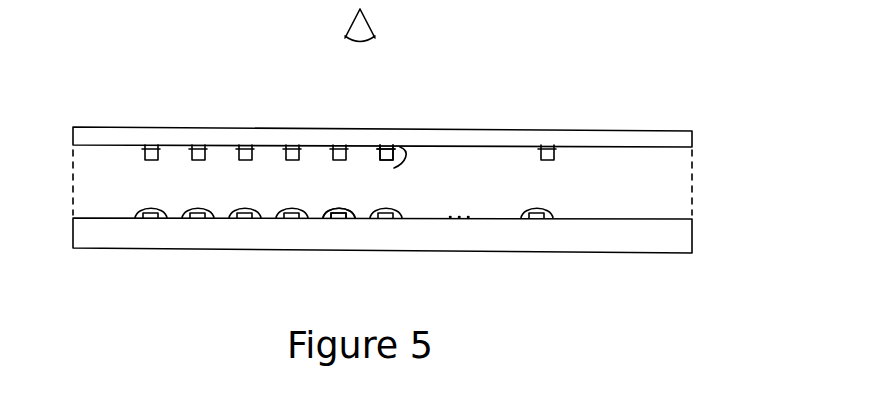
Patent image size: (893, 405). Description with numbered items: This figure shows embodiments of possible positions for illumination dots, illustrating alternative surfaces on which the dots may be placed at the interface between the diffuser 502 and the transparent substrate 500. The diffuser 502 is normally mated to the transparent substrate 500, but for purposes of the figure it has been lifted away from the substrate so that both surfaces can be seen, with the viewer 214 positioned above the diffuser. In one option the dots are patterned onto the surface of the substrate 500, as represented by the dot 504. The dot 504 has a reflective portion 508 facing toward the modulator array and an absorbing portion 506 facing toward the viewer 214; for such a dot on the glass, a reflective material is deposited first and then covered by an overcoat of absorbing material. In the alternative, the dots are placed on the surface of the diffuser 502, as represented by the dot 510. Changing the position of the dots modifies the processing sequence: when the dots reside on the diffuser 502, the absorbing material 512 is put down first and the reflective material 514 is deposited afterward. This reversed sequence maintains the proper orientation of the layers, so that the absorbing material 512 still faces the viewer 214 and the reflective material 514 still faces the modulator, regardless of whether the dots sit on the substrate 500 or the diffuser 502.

The viewer 214 is at (358, 34).
The transparent substrate 500 is at (693, 237).
The diffuser 502 is at (693, 142).
The dot 504 is at (406, 211).
The absorbing portion 506 is at (370, 216).
The reflective portion 508 is at (395, 216).
The dot 510 is at (392, 160).
The absorbing material 512 is at (391, 143).
The reflective material 514 is at (378, 160).